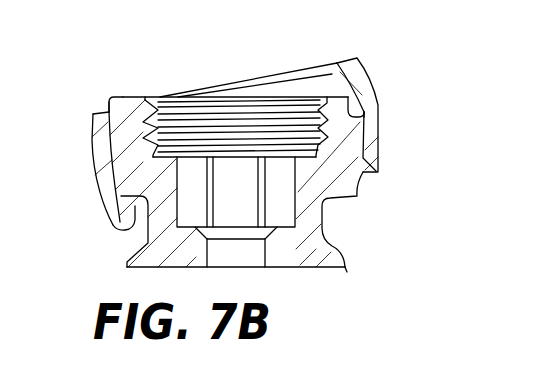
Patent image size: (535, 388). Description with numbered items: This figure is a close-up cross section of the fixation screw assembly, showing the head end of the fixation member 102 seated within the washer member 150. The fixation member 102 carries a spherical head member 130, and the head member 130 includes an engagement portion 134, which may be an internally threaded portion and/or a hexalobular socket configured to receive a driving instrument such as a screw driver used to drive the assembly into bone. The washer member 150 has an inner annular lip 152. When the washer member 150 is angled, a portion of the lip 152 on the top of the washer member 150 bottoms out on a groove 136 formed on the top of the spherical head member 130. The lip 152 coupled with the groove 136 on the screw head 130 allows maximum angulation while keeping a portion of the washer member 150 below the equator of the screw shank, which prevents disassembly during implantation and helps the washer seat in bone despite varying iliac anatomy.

The fixation member 102 is at (345, 268).
The head member 130 is at (355, 190).
The engagement portion 134 is at (200, 110).
The groove 136 is at (118, 96).
The washer member 150 is at (366, 93).
The inner annular lip 152 is at (112, 113).